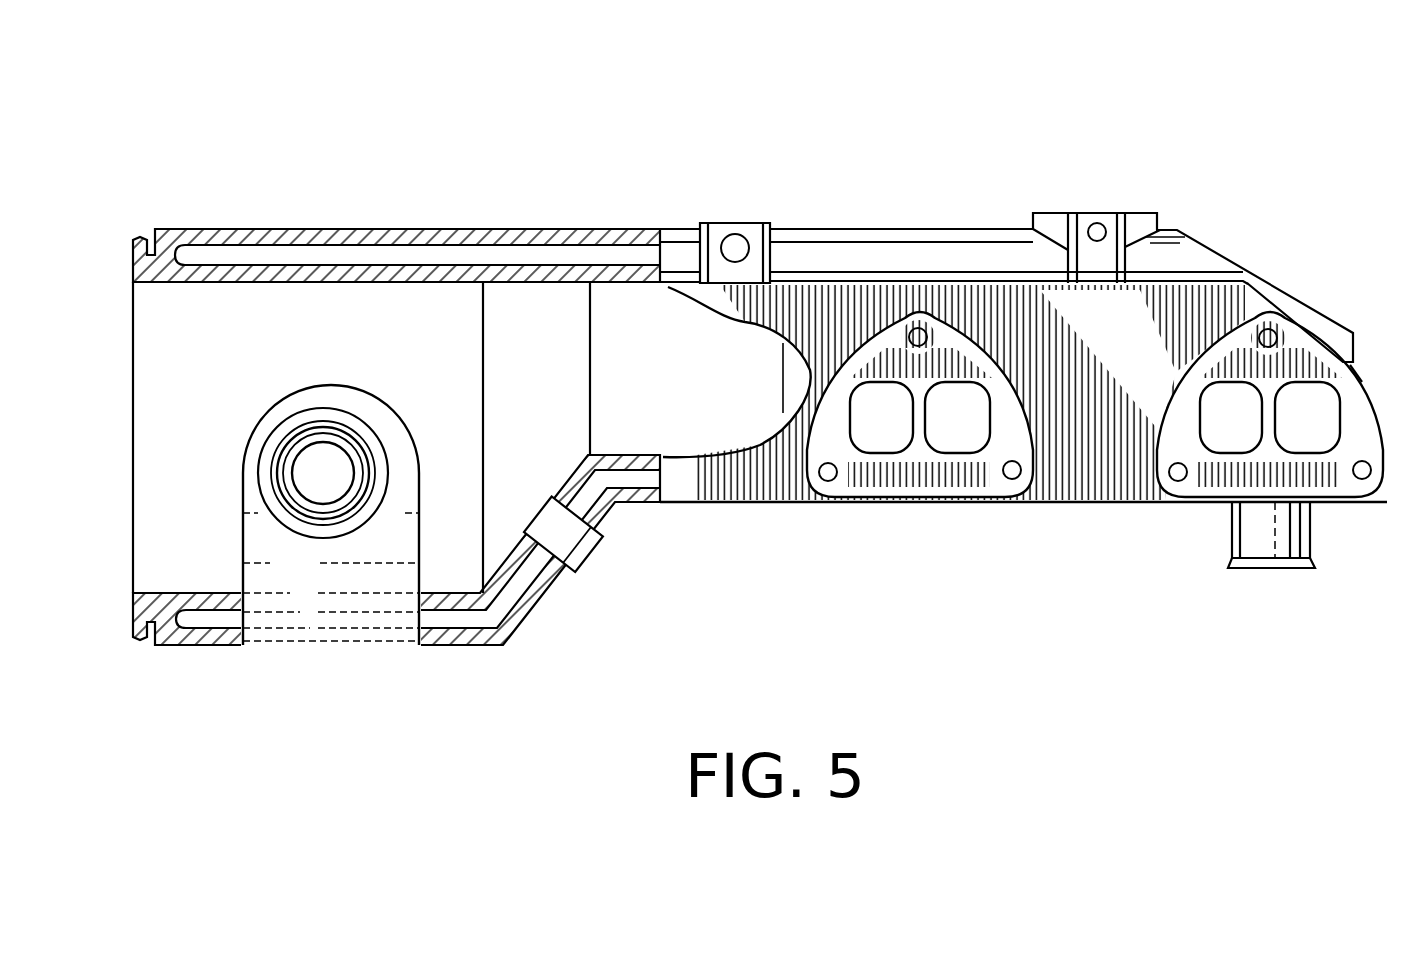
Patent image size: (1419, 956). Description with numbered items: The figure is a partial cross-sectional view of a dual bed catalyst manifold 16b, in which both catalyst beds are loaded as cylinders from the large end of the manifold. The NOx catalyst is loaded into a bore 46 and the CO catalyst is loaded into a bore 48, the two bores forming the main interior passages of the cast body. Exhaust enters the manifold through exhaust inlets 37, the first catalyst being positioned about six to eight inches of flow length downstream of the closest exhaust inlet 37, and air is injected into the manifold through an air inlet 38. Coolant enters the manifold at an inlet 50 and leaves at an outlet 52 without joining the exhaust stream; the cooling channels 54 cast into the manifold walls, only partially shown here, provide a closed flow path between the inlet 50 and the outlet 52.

The dual bed catalyst manifold 16b is at (956, 150).
The bore 48 is at (352, 312).
The cooling channels 54 is at (538, 258).
The bore 46 is at (628, 322).
The inlet 50 is at (327, 493).
The air inlet 38 is at (598, 560).
The exhaust inlet 37 is at (882, 438).
The outlet 52 is at (1247, 530).